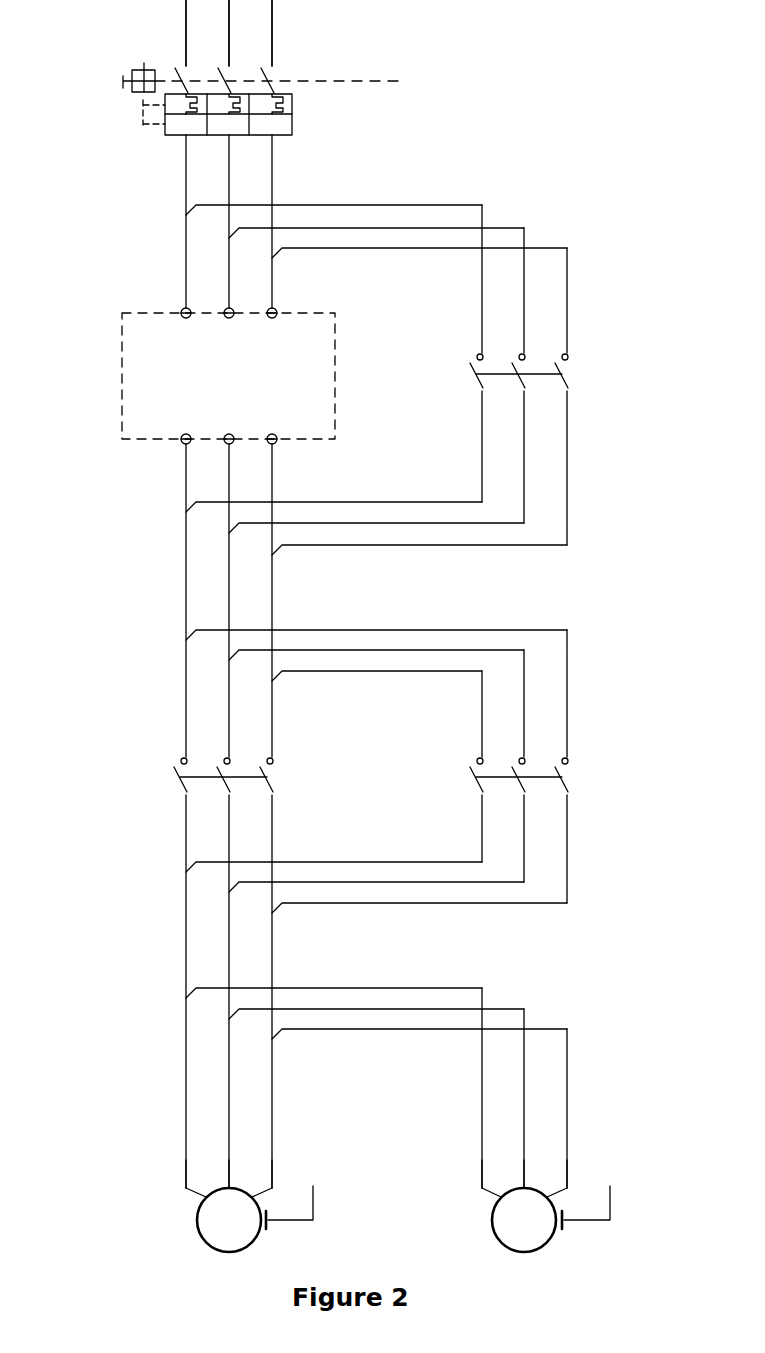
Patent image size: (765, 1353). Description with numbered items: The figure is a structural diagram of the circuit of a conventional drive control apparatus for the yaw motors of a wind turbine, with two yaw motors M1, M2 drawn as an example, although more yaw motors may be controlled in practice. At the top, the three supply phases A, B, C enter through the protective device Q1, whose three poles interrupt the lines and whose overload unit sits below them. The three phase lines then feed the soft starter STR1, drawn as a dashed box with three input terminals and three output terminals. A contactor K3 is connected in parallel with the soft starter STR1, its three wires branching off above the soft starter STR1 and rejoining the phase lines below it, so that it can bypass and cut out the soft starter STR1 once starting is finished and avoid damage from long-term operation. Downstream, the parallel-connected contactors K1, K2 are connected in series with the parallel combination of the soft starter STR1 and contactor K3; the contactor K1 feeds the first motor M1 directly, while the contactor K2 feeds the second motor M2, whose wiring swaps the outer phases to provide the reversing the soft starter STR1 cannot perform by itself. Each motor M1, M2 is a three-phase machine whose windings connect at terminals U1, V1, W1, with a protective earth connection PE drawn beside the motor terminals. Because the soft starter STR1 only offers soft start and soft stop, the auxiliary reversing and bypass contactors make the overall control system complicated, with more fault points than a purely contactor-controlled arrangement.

The phase A supply line A is at (145, 11).
The phase B supply line B is at (187, 11).
The phase C supply line C is at (231, 11).
The motor protection circuit breaker Q1 is at (77, 81).
The soft starter STR1 is at (55, 327).
The contactor K1 is at (133, 775).
The contactor K2 is at (430, 775).
The contactor K3 is at (430, 374).
The three-phase motor 1 M1 is at (133, 1220).
The three-phase motor 2 M2 is at (430, 1220).
The motor terminal U1 is at (349, 1174).
The motor terminal V1 is at (392, 1174).
The motor terminal W1 is at (437, 1174).
The protective earth terminal PE is at (450, 1197).